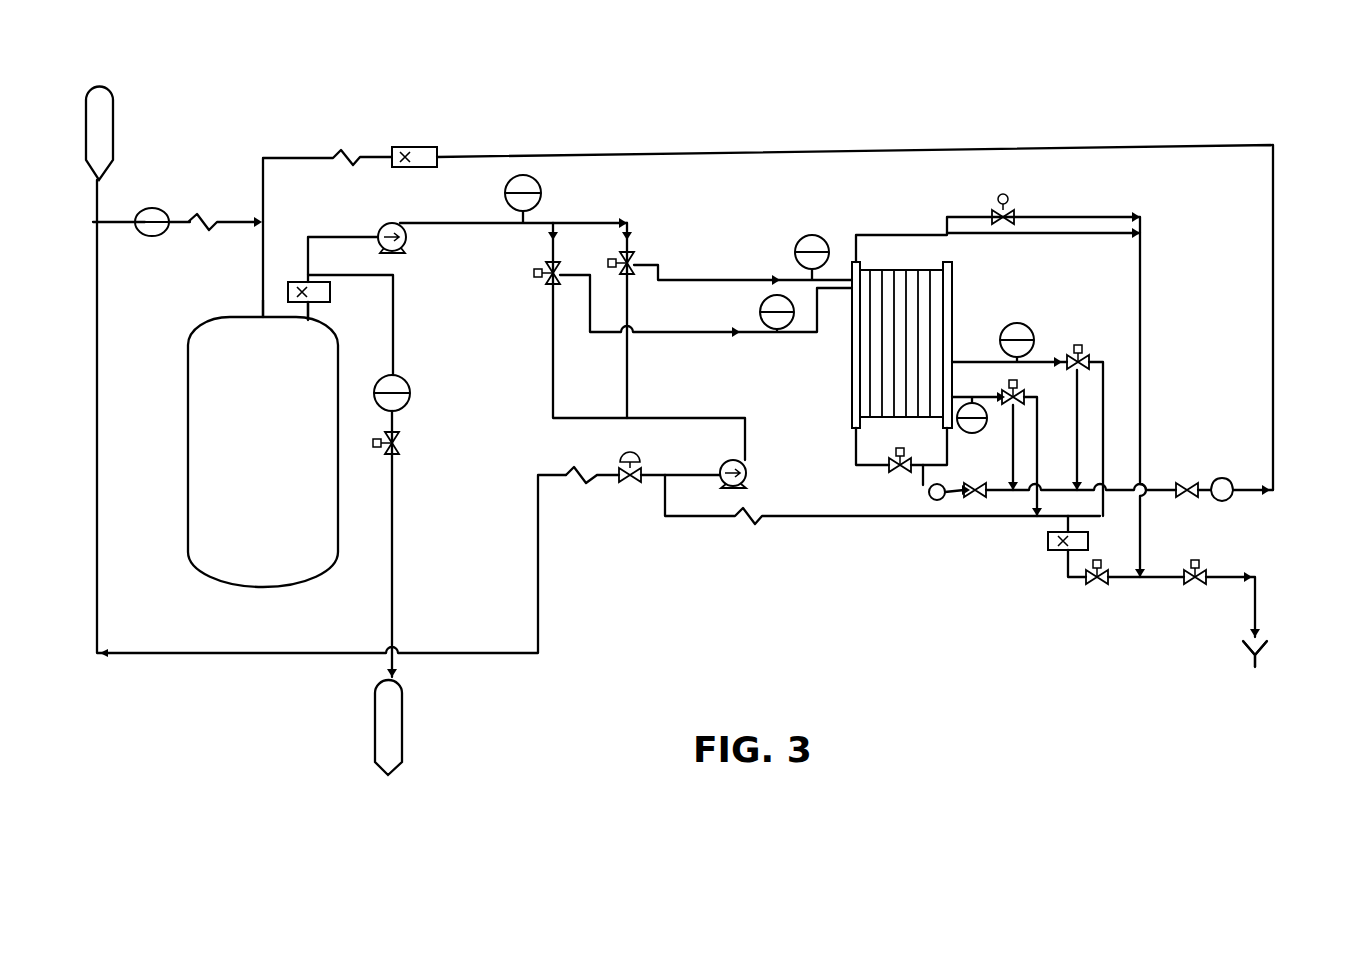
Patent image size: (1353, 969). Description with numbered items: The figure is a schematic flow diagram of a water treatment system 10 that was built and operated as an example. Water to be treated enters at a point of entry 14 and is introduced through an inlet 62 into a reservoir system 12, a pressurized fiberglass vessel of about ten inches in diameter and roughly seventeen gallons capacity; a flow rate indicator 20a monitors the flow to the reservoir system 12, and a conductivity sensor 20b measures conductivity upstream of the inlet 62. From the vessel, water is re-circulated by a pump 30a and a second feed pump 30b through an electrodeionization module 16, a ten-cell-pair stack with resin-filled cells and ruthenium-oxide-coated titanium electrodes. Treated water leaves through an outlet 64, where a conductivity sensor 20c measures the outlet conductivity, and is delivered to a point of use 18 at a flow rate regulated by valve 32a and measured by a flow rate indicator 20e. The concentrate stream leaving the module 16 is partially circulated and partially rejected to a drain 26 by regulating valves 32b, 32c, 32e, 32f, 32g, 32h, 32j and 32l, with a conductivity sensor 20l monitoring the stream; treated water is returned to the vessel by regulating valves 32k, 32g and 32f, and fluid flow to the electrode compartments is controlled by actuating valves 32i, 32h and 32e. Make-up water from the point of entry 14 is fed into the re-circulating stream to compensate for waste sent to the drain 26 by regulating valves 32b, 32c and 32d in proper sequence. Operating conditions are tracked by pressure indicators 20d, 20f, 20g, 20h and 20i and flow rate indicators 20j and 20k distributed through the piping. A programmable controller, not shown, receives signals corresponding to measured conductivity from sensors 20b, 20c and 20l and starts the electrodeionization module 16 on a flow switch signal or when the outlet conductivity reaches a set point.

The water treatment system 10 is at (510, 62).
The reservoir system 12 is at (187, 473).
The point of entry 14 is at (114, 113).
The electrodeionization module 16 is at (851, 361).
The point of use 18 is at (402, 716).
The flow rate indicator 20a is at (152, 207).
The conductivity sensor 20b is at (415, 147).
The conductivity sensor 20c is at (290, 281).
The pressure indicator 20d is at (541, 189).
The flow rate indicator 20e is at (412, 393).
The pressure indicator 20f is at (758, 306).
The pressure indicator 20g is at (818, 236).
The pressure indicator 20h is at (1014, 323).
The pressure indicator 20i is at (975, 434).
The flow rate indicator 20j is at (933, 502).
The flow rate indicator 20k is at (1235, 501).
The conductivity sensor 20l is at (1057, 554).
The drain 26 is at (1280, 646).
The pump 30a is at (406, 246).
The pump 30b is at (747, 474).
The valve 32a is at (405, 443).
The valve 32b is at (546, 283).
The valve 32c is at (634, 260).
The valve 32d is at (632, 483).
The valve 32e is at (1016, 210).
The valve 32f is at (1084, 354).
The valve 32g is at (1022, 400).
The valve 32h is at (893, 470).
The valve 32i is at (978, 498).
The valve 32j is at (1102, 586).
The valve 32k is at (1190, 483).
The valve 32l is at (1200, 586).
The inlet 62 is at (262, 312).
The outlet 64 is at (316, 320).